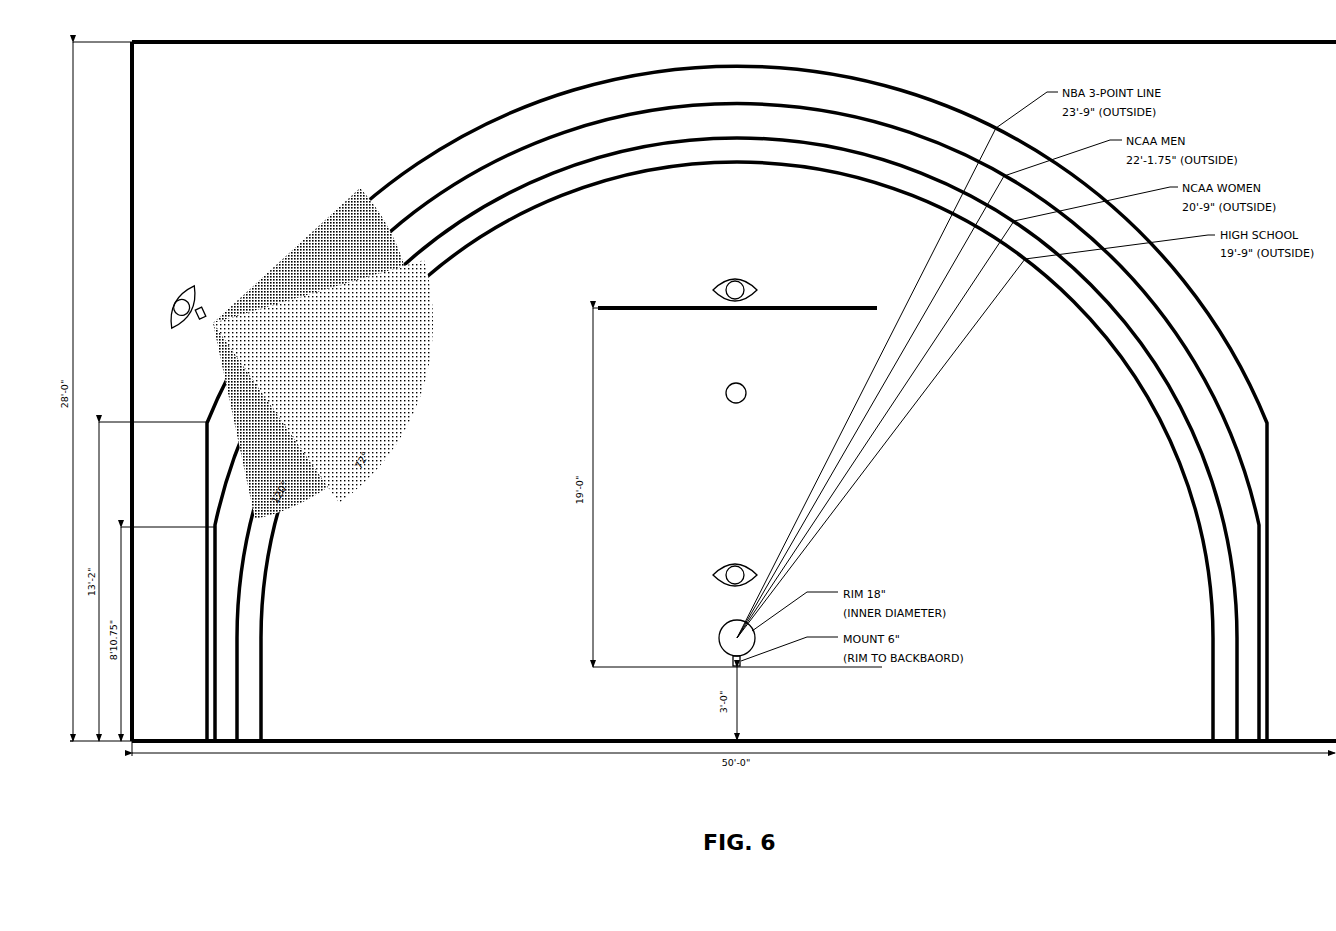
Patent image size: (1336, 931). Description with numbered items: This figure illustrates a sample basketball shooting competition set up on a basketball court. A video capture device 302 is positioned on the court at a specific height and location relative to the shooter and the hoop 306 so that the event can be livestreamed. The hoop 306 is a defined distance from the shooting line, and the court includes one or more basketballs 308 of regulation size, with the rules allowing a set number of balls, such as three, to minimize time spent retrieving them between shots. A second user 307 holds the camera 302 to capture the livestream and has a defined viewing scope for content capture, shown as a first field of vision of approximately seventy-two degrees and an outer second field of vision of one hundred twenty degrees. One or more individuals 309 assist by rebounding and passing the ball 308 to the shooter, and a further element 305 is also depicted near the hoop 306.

The video capture device 302 is at (201, 329).
The sensor 305 is at (767, 289).
The hoop 306 is at (707, 638).
The second user 307 is at (166, 301).
The basketball 308 is at (717, 394).
The individual 309 is at (708, 576).